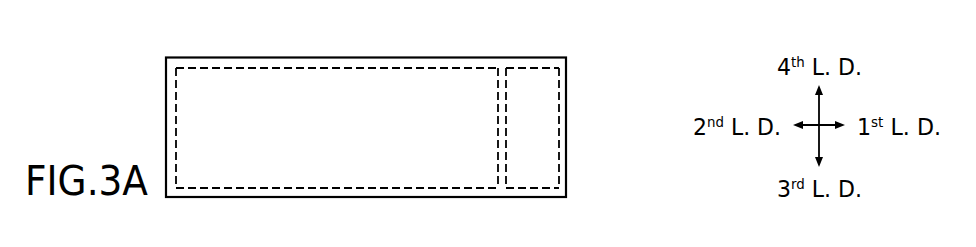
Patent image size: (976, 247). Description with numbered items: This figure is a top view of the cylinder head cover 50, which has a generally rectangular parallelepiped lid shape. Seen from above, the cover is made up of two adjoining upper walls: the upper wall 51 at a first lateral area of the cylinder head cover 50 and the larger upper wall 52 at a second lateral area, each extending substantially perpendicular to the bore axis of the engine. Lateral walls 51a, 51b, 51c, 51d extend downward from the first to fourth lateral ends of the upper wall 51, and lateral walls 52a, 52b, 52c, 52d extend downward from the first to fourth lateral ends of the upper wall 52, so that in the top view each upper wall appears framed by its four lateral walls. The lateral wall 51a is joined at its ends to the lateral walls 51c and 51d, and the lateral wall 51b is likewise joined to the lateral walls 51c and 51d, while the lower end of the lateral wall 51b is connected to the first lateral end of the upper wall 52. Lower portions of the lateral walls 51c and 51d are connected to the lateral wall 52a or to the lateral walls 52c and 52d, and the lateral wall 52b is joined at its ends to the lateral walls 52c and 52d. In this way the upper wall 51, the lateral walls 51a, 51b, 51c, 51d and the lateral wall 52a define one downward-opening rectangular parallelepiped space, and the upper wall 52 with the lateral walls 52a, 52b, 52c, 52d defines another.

The cylinder head cover 50 is at (264, 49).
The upper wall 51 is at (508, 131).
The lateral wall 51a is at (566, 127).
The lateral wall 51b is at (448, 128).
The lateral wall 51c is at (540, 196).
The lateral wall 51d is at (527, 63).
The upper wall 52 is at (302, 131).
The lateral wall 52a is at (501, 108).
The lateral wall 52b is at (173, 127).
The lateral wall 52c is at (355, 190).
The lateral wall 52d is at (353, 64).